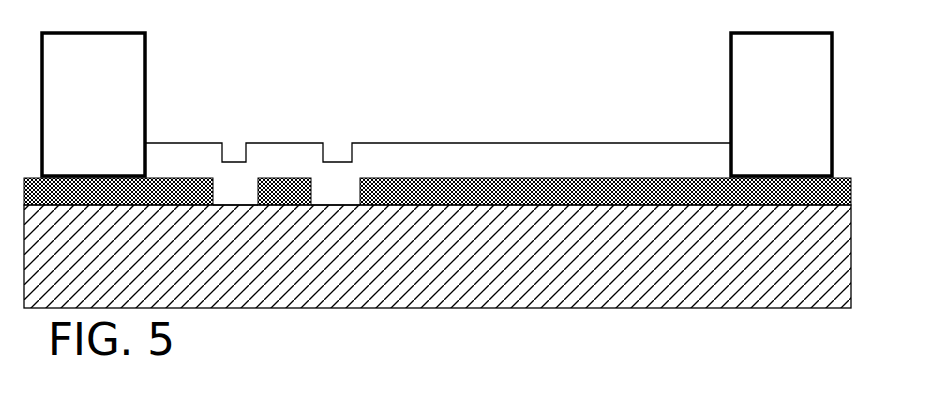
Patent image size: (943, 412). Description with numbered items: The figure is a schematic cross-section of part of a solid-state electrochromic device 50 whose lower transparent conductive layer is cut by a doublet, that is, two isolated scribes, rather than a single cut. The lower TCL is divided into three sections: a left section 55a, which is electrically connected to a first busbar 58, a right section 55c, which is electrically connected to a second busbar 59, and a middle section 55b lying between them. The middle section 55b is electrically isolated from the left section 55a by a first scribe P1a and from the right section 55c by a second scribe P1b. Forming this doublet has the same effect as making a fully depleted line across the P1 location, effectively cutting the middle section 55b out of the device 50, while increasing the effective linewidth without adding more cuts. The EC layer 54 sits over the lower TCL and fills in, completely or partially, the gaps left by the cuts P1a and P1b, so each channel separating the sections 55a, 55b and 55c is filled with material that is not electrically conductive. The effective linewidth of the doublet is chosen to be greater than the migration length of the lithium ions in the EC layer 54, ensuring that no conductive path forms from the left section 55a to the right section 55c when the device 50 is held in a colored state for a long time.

The solid-state electrochromic device 50 is at (483, 386).
The EC layer 54 is at (438, 160).
The left section of the lower TCL 55a is at (118, 191).
The middle section of the lower TCL 55b is at (284, 191).
The right section of the lower TCL 55c is at (605, 191).
The first busbar 58 is at (107, 116).
The second busbar 59 is at (795, 116).
The first scribe P1a is at (235, 186).
The second scribe P1b is at (335, 186).